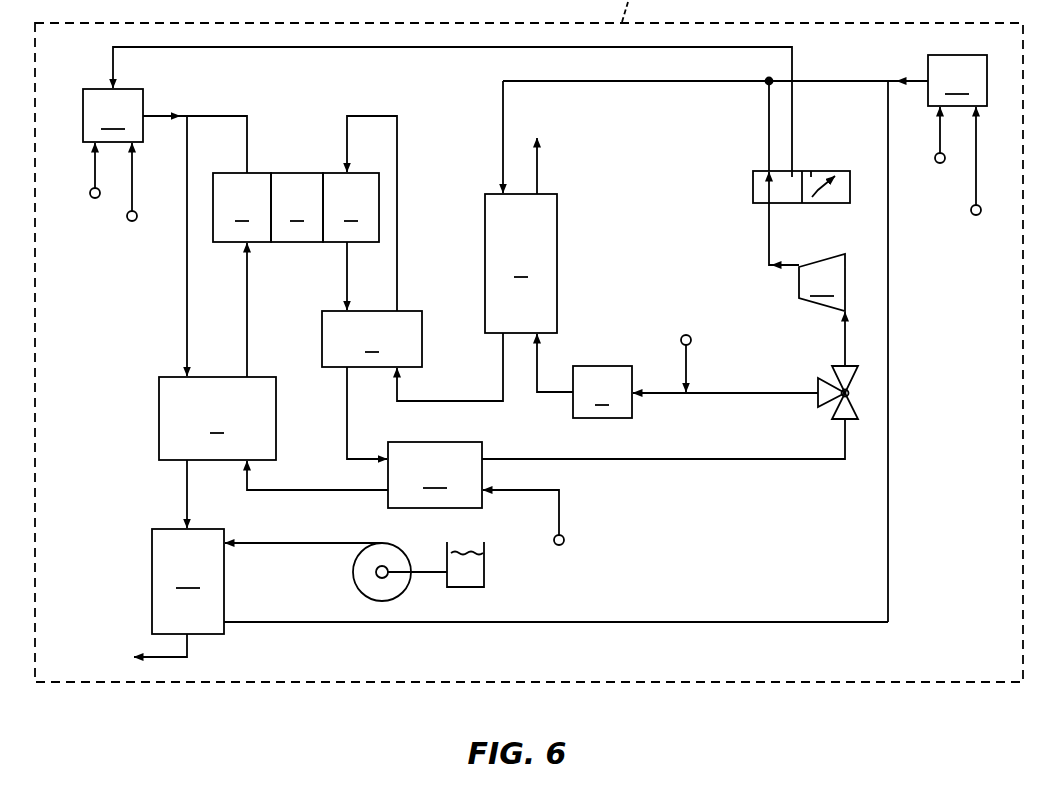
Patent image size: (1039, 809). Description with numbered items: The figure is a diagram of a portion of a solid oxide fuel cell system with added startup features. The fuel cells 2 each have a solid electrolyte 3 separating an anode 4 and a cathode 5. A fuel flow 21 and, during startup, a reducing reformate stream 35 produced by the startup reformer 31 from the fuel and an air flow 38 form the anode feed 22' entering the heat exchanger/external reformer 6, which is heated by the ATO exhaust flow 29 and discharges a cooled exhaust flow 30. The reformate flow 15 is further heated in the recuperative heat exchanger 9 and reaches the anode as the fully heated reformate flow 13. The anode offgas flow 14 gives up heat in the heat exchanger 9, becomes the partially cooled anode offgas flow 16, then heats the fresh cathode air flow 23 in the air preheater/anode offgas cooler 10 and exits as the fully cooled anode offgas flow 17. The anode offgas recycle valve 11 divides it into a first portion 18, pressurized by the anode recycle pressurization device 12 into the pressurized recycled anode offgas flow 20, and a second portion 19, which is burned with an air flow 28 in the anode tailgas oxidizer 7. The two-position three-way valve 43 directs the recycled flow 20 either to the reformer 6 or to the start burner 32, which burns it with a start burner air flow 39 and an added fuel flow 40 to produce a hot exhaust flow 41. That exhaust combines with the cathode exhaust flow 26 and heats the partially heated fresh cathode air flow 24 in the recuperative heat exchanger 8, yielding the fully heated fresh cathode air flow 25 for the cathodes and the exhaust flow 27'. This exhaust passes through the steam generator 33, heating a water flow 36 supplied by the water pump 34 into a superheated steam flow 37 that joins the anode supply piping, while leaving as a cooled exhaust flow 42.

The fuel cells 2 is at (289, 150).
The solid electrolyte 3 is at (297, 207).
The anode 4 is at (351, 207).
The cathode 5 is at (242, 207).
The heat exchanger/external reformer (HELPER) 6 is at (521, 263).
The anode tailgas oxidizer (ATO) 7 is at (602, 392).
The recuperative heat exchanger 8 is at (217, 418).
The recuperative heat exchanger 9 is at (372, 339).
The air preheater/anode offgas cooler 10 is at (435, 475).
The anode offgas recycle valve 11 is at (822, 414).
The anode recycle pressurization device 12 is at (822, 282).
The fully heated reformate flow 13 is at (398, 173).
The anode offgas flow 14 is at (347, 265).
The reformate flow 15 is at (435, 402).
The partially cooled anode offgas flow 16 is at (345, 408).
The fully cooled anode offgas flow 17 is at (688, 462).
The first portion of anode offgas flow 18 is at (845, 348).
The second portion of anode offgas flow 19 is at (733, 390).
The pressurized recycled anode offgas flow 20 is at (768, 229).
The fuel flow 21 is at (977, 187).
The anode feed 22' is at (685, 136).
The fresh cathode air flow 23 is at (560, 508).
The partially heated fresh cathode air flow 24 is at (290, 492).
The fully heated fresh cathode air flow 25 is at (248, 338).
The cathode exhaust flow 26 is at (218, 110).
The exhaust flow 27' is at (158, 494).
The air flow 28 is at (680, 358).
The ATO exhaust flow 29 is at (539, 370).
The cooled exhaust flow 30 is at (539, 164).
The startup reformer 31 is at (957, 80).
The start burner 32 is at (113, 115).
The steam generator 33 is at (188, 581).
The water pump 34 is at (360, 594).
The reformate stream 35 is at (913, 75).
The water flow 36 is at (283, 545).
The superheated steam flow 37 is at (690, 622).
The air flow 38 is at (937, 133).
The start burner air flow 39 is at (92, 170).
The fuel flow 40 is at (133, 177).
The hot exhaust flow 41 is at (155, 110).
The cooled exhaust flow 42 is at (193, 645).
The two-position three-way valve 43 is at (752, 187).